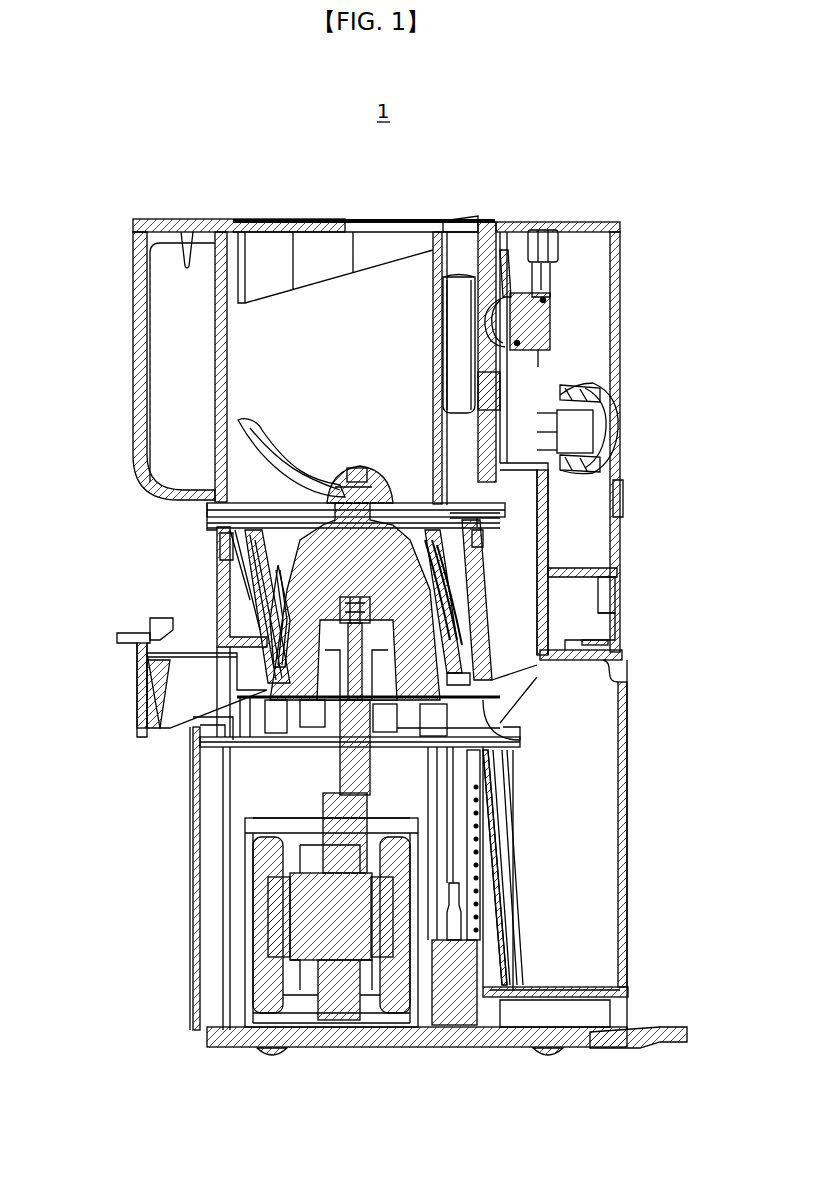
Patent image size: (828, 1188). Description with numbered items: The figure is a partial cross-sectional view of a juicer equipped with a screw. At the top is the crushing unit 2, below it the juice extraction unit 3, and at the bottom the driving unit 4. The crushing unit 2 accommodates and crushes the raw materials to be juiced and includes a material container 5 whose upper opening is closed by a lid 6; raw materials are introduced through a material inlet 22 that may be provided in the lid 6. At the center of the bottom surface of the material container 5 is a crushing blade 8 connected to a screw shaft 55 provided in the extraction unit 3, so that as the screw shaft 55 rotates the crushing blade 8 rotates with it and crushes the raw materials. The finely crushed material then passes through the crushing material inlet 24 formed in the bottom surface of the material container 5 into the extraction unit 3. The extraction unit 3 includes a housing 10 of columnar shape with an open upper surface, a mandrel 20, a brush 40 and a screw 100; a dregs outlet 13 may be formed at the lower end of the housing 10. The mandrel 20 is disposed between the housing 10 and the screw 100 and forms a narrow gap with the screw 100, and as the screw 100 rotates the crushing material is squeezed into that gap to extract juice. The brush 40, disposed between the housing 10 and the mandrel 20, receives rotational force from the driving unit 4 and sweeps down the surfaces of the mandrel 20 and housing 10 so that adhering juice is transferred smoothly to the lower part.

The crushing unit 2 is at (115, 368).
The juice extraction unit 3 is at (365, 615).
The driving unit 4 is at (158, 892).
The material container 5 is at (222, 317).
The lid 6 is at (210, 232).
The crushing blade 8 is at (255, 443).
The housing 10 is at (222, 567).
The dregs outlet 13 is at (183, 695).
The mandrel 20 is at (440, 567).
The material inlet 22 is at (318, 247).
The crushing material inlet 24 is at (450, 520).
The brush 40 is at (243, 628).
The screw shaft 55 is at (357, 547).
The screw 100 is at (290, 610).